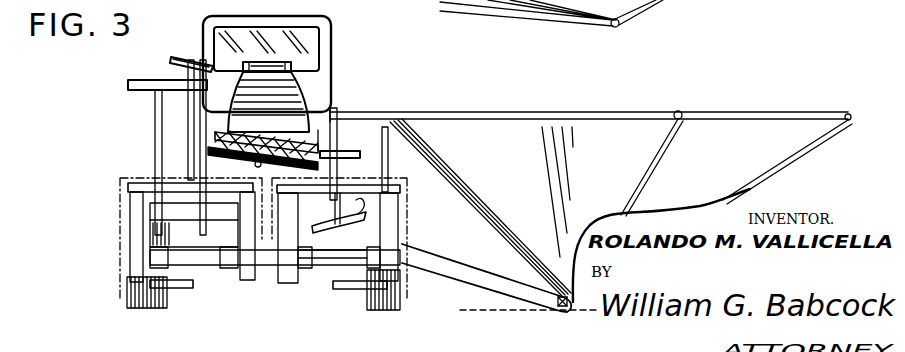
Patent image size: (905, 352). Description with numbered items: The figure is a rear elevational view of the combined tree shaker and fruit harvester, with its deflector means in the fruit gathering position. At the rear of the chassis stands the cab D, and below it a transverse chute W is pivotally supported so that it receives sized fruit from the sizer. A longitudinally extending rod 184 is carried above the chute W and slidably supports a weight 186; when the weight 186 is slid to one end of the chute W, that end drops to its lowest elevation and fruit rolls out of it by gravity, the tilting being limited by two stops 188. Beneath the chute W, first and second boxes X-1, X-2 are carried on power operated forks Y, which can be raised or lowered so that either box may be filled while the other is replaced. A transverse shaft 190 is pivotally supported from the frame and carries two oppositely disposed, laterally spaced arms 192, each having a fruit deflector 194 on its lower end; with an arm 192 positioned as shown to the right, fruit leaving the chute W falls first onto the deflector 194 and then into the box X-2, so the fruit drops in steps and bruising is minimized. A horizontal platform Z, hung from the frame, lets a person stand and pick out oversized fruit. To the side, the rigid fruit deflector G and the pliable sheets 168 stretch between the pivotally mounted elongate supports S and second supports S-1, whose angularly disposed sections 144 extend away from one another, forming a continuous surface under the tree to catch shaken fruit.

The angularly disposed section 144 is at (340, 228).
The sheets of pliable material 168 is at (528, 181).
The rod 184 is at (296, 118).
The weight 186 is at (322, 140).
The stops 188 is at (215, 138).
The transverse shaft 190 is at (352, 112).
The arms 192 is at (160, 101).
The fruit deflectors 194 is at (186, 56).
The cab D is at (331, 40).
The chute W is at (225, 100).
The fruit deflector G is at (146, 80).
The elongate supports S is at (850, 122).
The second supports S-1 is at (622, 24).
The first box X-1 is at (120, 199).
The second box X-2 is at (410, 195).
The forks Y is at (130, 292).
The platform Z is at (180, 290).